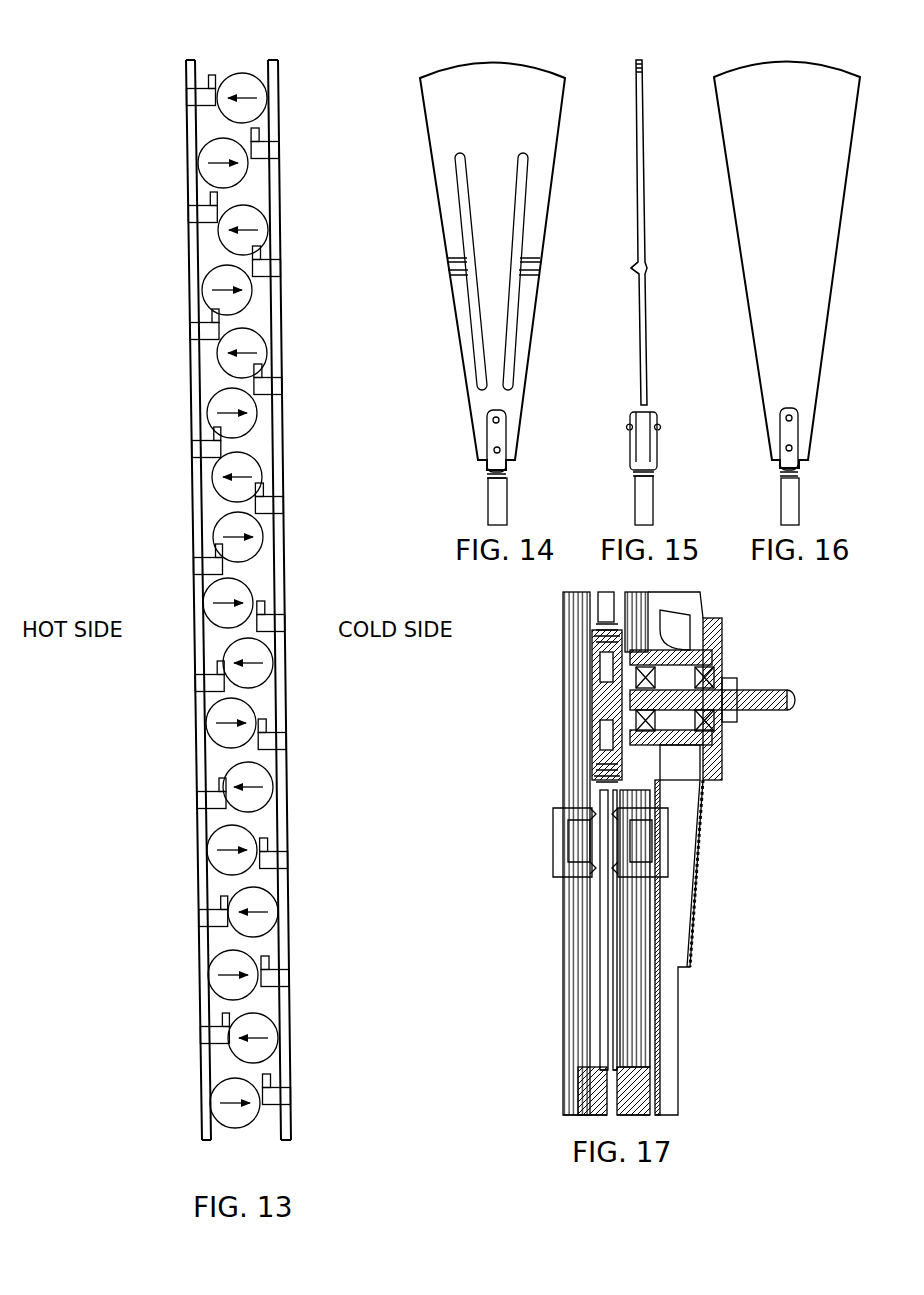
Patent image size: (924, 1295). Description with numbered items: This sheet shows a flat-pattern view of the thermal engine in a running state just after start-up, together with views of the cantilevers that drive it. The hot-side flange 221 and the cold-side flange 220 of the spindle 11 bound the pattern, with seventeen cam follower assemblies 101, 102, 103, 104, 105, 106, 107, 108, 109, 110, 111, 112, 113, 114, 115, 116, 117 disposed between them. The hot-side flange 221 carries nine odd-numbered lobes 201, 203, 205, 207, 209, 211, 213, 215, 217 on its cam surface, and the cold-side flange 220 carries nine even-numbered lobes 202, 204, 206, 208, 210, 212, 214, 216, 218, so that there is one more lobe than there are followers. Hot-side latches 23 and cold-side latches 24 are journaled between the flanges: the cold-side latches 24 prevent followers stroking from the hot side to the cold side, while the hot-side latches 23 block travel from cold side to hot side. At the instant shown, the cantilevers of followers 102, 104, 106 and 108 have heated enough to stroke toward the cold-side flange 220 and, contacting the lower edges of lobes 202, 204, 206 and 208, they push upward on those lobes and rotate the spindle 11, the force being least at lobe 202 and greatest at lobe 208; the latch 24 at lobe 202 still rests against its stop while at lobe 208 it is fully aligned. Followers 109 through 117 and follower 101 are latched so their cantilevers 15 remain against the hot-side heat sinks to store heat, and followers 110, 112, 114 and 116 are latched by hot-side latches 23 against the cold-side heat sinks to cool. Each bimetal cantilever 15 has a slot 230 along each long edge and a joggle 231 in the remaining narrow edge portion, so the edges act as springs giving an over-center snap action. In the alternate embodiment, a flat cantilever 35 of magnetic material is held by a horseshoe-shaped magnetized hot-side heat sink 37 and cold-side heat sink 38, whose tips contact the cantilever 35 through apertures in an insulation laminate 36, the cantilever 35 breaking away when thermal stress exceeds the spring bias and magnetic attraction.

In FIG. 17, the spindle 11 is at (592, 697).
In FIG. 14, the cantilever 15 is at (493, 62).
In FIG. 15, the cantilever 15 is at (645, 62).
In FIG. 13, the hot-side latch 23 is at (208, 79).
In FIG. 13, the cold-side latch 24 is at (259, 135).
In FIG. 16, the flat cantilever 35 is at (790, 62).
In FIG. 17, the flat cantilever 35 is at (617, 975).
In FIG. 17, the insulation laminate 36 is at (604, 790).
In FIG. 17, the hot-side heat sink 37 is at (553, 830).
In FIG. 17, the cold-side heat sink 38 is at (665, 843).
In FIG. 13, the cam follower assembly 101 is at (206, 120).
In FIG. 13, the cam follower assembly 102 is at (259, 182).
In FIG. 13, the cam follower assembly 103 is at (208, 245).
In FIG. 13, the cam follower assembly 104 is at (262, 307).
In FIG. 13, the cam follower assembly 105 is at (207, 370).
In FIG. 13, the cam follower assembly 106 is at (262, 432).
In FIG. 13, the cam follower assembly 107 is at (206, 495).
In FIG. 13, the cam follower assembly 108 is at (265, 555).
In FIG. 13, the cam follower assembly 109 is at (207, 635).
In FIG. 13, the cam follower assembly 110 is at (268, 688).
In FIG. 13, the cam follower assembly 111 is at (208, 750).
In FIG. 13, the cam follower assembly 112 is at (270, 812).
In FIG. 13, the cam follower assembly 113 is at (208, 875).
In FIG. 13, the cam follower assembly 114 is at (272, 940).
In FIG. 13, the cam follower assembly 115 is at (207, 1006).
In FIG. 13, the cam follower assembly 116 is at (284, 1063).
In FIG. 13, the cam follower assembly 117 is at (207, 1136).
In FIG. 13, the lobe 201 is at (187, 97).
In FIG. 13, the lobe 202 is at (280, 152).
In FIG. 13, the lobe 203 is at (190, 215).
In FIG. 13, the lobe 204 is at (282, 272).
In FIG. 13, the lobe 205 is at (193, 333).
In FIG. 13, the lobe 206 is at (284, 392).
In FIG. 13, the lobe 207 is at (196, 452).
In FIG. 13, the lobe 208 is at (285, 507).
In FIG. 13, the lobe 209 is at (195, 570).
In FIG. 13, the lobe 210 is at (286, 627).
In FIG. 13, the lobe 211 is at (222, 672).
In FIG. 13, the lobe 212 is at (288, 746).
In FIG. 13, the lobe 213 is at (200, 803).
In FIG. 13, the lobe 214 is at (290, 862).
In FIG. 13, the lobe 215 is at (200, 920).
In FIG. 13, the lobe 216 is at (290, 985).
In FIG. 13, the lobe 217 is at (222, 1029).
In FIG. 13, the lobe 218 is at (291, 1101).
In FIG. 13, the cold-side flange 220 is at (293, 1055).
In FIG. 13, the hot-side flange 221 is at (207, 1004).
In FIG. 14, the slot 230 is at (515, 355).
In FIG. 14, the joggle 231 is at (528, 258).
In FIG. 15, the joggle 231 is at (632, 270).